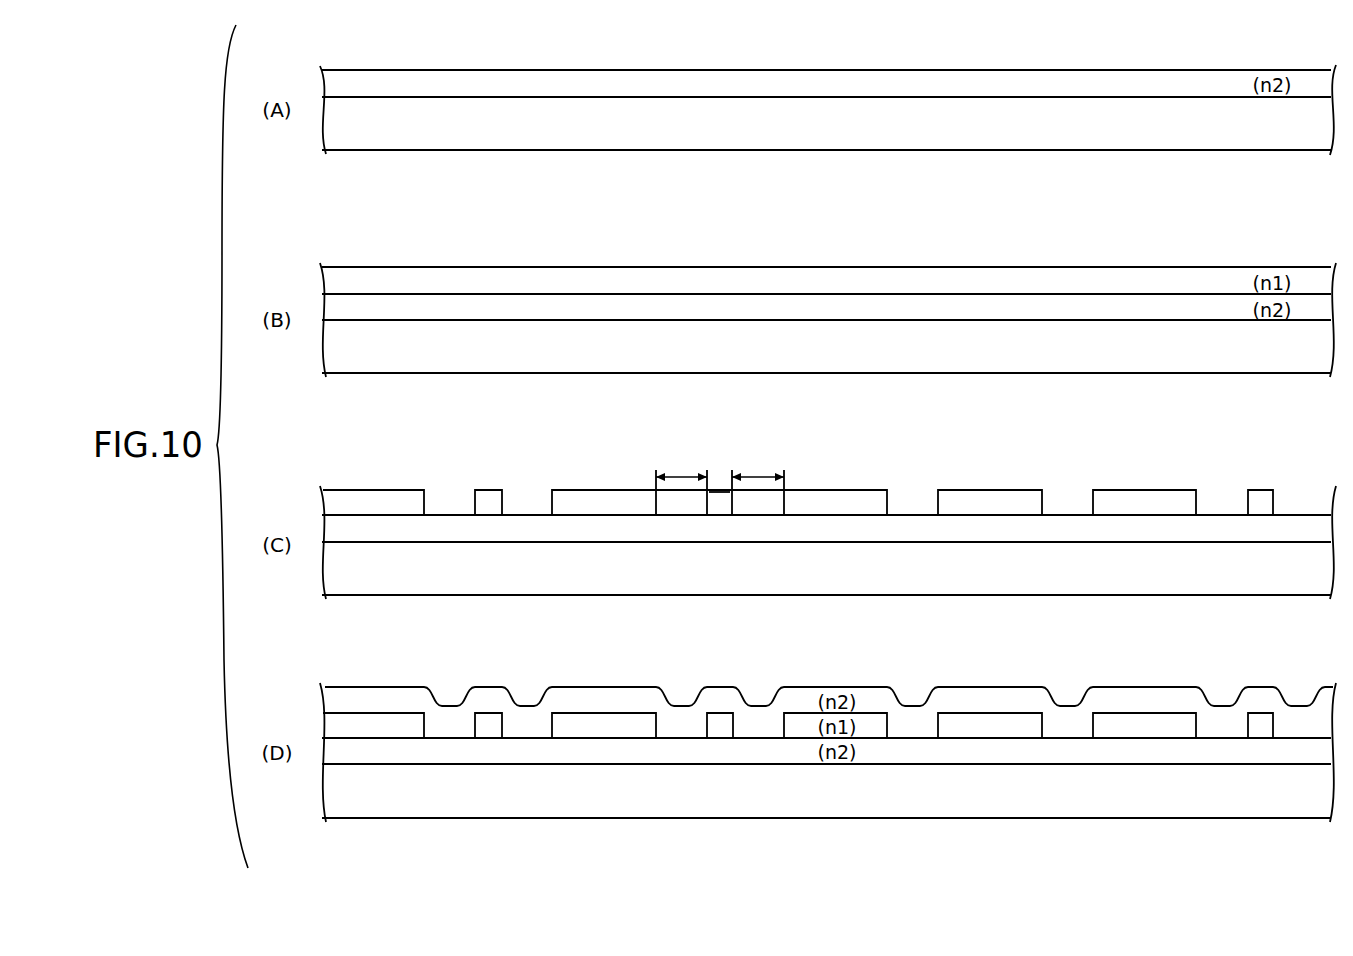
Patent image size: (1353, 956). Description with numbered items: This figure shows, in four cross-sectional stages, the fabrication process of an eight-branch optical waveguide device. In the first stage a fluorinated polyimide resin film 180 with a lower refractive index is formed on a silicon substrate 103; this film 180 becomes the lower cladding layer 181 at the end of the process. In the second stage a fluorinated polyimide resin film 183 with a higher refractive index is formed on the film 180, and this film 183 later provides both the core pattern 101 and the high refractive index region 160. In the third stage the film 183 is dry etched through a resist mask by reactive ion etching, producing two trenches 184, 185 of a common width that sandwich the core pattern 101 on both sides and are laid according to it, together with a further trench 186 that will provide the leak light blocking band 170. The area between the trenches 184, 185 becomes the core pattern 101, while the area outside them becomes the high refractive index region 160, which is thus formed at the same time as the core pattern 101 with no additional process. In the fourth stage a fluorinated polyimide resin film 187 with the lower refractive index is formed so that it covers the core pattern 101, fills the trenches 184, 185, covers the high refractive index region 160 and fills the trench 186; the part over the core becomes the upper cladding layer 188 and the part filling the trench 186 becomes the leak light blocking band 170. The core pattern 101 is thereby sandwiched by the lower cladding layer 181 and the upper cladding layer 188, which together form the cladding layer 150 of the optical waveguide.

The fluorinated polyimide resin film 180 is at (1163, 73).
The silicon substrate 103 is at (1160, 137).
The fluorinated polyimide resin film 183 is at (1213, 285).
The high refractive index region 160 is at (631, 490).
The core pattern 101 is at (718, 488).
The trench 185 is at (683, 503).
The trench 184 is at (756, 503).
The trench 186 is at (1066, 500).
The upper cladding layer 188 is at (727, 697).
The upper cladding layer 150 is at (757, 686).
The fluorinated polyimide resin film 187 is at (1277, 697).
The lower cladding layer 181 is at (720, 753).
The leak light blocking band 170 is at (915, 735).